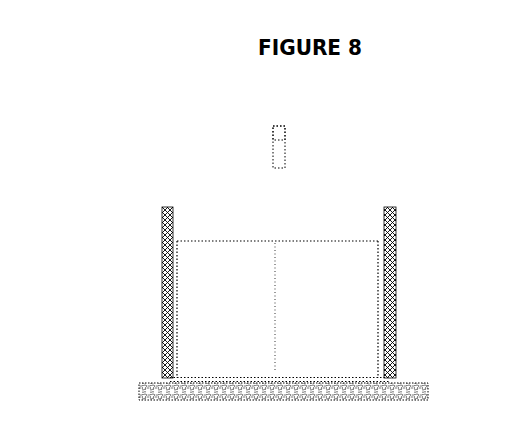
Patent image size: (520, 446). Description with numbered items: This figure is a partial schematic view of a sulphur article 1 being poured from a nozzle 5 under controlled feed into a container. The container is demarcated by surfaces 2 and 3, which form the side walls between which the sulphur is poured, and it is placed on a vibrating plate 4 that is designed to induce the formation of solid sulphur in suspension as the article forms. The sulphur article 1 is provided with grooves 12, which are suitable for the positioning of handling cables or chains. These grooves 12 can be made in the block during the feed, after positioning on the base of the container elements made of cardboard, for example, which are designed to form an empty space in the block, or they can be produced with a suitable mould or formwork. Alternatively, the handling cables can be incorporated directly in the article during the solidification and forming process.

The sulphur article 1 is at (397, 245).
The surface 2 is at (163, 374).
The surface 3 is at (163, 274).
The vibrating plate 4 is at (408, 383).
The nozzle 5 is at (281, 145).
The grooves 12 is at (288, 243).